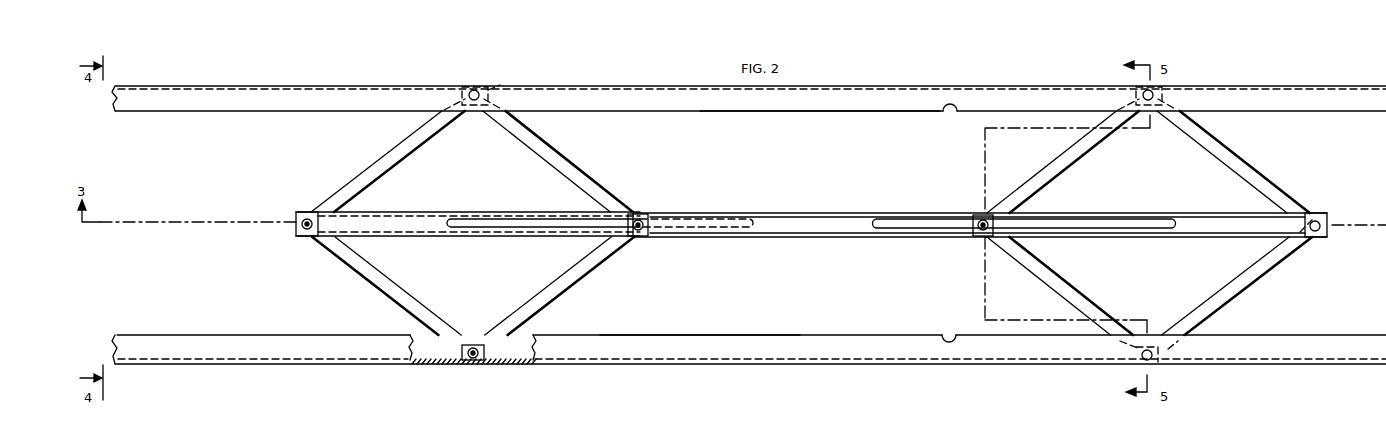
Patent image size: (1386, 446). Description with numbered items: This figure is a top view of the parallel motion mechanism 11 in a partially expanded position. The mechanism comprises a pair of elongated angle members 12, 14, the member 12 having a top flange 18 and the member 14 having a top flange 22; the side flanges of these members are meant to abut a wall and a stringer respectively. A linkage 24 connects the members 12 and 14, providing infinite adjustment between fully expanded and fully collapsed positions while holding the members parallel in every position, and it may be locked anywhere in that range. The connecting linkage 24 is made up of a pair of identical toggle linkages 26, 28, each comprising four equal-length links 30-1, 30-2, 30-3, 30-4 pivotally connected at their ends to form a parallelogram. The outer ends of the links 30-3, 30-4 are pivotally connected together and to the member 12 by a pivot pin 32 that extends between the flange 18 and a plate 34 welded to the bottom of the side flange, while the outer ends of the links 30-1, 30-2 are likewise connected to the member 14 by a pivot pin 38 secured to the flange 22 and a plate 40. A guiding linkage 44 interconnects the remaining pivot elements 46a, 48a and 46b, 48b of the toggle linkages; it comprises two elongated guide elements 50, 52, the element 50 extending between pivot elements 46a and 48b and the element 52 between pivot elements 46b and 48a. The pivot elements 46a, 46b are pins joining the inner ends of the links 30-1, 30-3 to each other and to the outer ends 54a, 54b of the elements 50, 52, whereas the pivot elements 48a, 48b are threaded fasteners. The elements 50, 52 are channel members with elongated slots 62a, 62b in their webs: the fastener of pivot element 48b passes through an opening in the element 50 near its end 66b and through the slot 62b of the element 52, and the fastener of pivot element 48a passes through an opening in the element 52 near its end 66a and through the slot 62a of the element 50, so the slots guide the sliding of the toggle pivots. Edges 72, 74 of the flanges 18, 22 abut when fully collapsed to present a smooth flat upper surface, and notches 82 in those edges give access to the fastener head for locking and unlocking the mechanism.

The parallel motion mechanism 11 is at (769, 387).
The elongated angle member 12 is at (945, 79).
The elongated angle member 14 is at (835, 365).
The top flange 18 is at (830, 103).
The top flange 22 is at (815, 348).
The linkage 24 is at (763, 265).
The toggle linkage 26 is at (465, 159).
The toggle linkage 28 is at (1145, 177).
The link 30-1 is at (377, 275).
The link 30-2 is at (563, 292).
The link 30-3 is at (368, 173).
The link 30-4 is at (585, 170).
The pivot pin 32 is at (476, 90).
The plate 34 is at (491, 88).
The pivot pin 38 is at (479, 361).
The plate 40 is at (467, 362).
The guiding linkage 44 is at (726, 209).
The pivot element 46a is at (307, 232).
The pivot element 46b is at (1316, 220).
The pivot element 48a is at (645, 237).
The pivot element 48b is at (984, 237).
The guide element 50 is at (413, 232).
The guide element 52 is at (772, 220).
The outer end 54a is at (298, 214).
The outer end 54b is at (1330, 233).
The elongated slot 62a is at (530, 230).
The elongated slot 62b is at (911, 232).
The end 66a is at (641, 213).
The end 66b is at (1020, 220).
The edge 72 is at (770, 112).
The edge 74 is at (708, 334).
The notch 82 is at (949, 118).